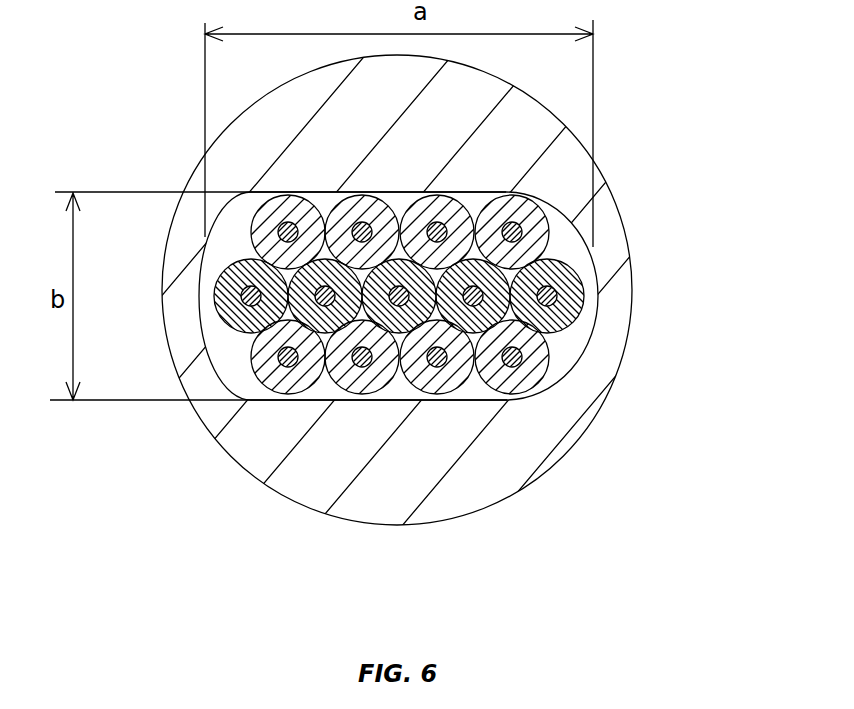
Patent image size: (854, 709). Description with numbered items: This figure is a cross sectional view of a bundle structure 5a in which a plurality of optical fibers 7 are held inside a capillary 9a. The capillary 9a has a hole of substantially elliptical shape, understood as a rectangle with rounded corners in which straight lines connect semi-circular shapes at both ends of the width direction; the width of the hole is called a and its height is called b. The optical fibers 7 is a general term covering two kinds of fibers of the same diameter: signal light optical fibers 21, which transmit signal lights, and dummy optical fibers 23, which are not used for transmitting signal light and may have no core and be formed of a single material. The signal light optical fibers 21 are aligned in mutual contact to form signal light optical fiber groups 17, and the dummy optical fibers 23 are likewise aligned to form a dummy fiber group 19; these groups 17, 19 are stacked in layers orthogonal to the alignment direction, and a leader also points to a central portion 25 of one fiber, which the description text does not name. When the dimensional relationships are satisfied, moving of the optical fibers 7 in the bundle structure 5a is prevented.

The bundle structure 5a is at (427, 354).
The optical fiber 7 is at (434, 354).
The capillary 9a is at (563, 433).
The signal light optical fiber group 17 is at (414, 354).
The dummy fiber group 19 is at (637, 315).
The signal light optical fiber 21 is at (288, 416).
The dummy optical fiber 23 is at (300, 338).
The conductor 25 is at (284, 228).